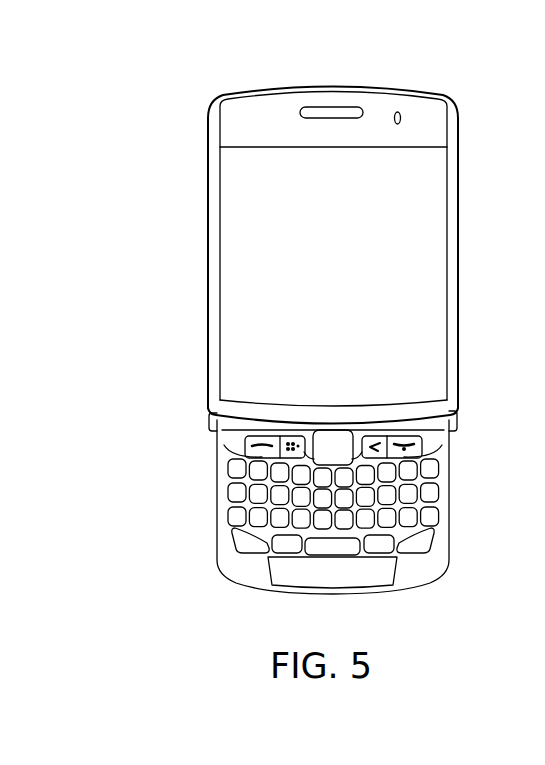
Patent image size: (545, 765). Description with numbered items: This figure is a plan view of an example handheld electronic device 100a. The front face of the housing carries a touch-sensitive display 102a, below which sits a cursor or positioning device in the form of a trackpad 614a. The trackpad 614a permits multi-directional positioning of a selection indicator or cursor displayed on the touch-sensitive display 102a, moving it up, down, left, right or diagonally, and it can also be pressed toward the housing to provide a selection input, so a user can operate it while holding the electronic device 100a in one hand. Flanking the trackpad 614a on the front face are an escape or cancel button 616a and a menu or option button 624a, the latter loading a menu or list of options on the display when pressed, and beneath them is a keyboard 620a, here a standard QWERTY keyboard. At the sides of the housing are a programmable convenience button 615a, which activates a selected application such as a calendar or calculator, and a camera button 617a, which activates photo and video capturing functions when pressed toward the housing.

The electronic device 100a is at (198, 132).
The touch-sensitive display 102a is at (448, 218).
The trackpad 614a is at (336, 430).
The programmable convenience button 615a is at (213, 421).
The escape or cancel button 616a is at (387, 449).
The camera button 617a is at (455, 423).
The keyboard 620a is at (244, 550).
The menu or option button 624a is at (280, 448).